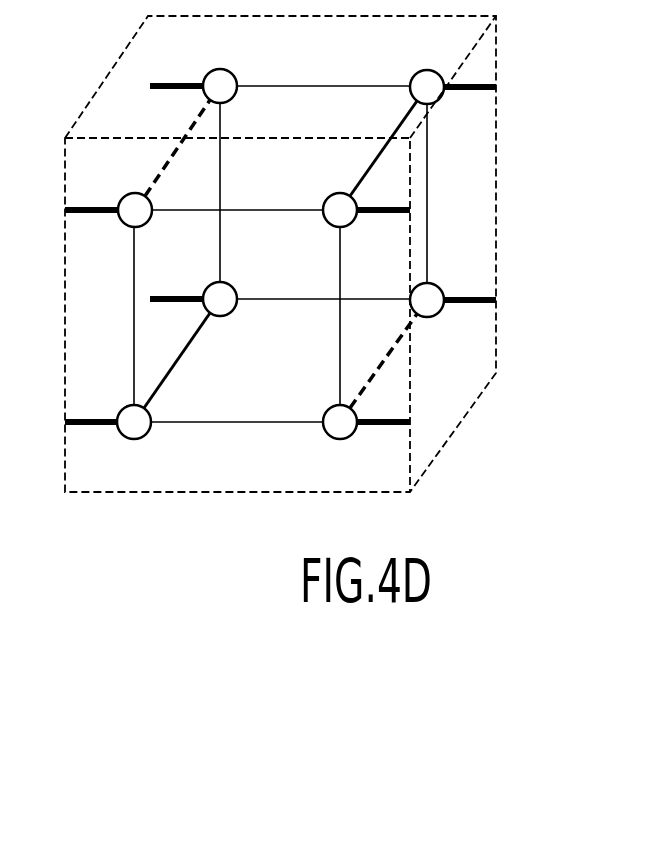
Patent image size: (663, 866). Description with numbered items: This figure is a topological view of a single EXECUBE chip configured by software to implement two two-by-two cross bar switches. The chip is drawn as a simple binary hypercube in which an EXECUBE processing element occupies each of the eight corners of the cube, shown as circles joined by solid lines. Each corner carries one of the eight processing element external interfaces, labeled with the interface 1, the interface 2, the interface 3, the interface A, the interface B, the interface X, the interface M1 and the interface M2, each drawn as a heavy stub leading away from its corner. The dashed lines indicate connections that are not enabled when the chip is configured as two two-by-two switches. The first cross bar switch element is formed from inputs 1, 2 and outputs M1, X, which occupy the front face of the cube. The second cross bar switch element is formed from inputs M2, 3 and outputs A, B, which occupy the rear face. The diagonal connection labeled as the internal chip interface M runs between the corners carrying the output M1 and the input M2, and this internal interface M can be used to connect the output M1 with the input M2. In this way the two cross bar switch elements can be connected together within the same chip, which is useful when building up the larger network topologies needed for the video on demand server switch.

The PE external interface A is at (176, 84).
The PE external interface M2 is at (475, 88).
The PE external interface 1 is at (93, 210).
The PE external interface M1 is at (400, 210).
The PE external interface 3 is at (193, 316).
The PE external interface B is at (471, 300).
The PE external interface X is at (91, 420).
The PE external interface 2 is at (383, 423).
The internal chip interface M is at (371, 148).